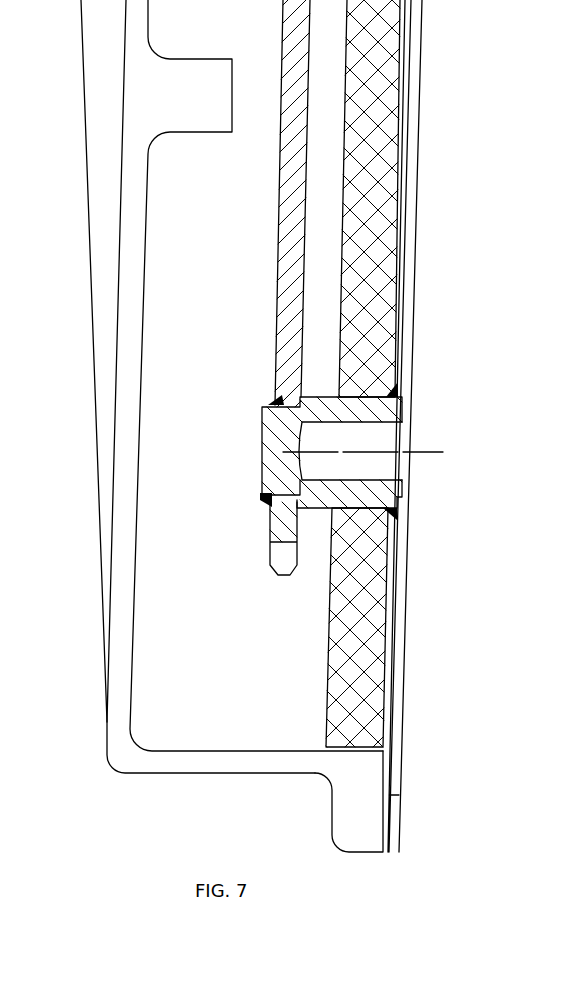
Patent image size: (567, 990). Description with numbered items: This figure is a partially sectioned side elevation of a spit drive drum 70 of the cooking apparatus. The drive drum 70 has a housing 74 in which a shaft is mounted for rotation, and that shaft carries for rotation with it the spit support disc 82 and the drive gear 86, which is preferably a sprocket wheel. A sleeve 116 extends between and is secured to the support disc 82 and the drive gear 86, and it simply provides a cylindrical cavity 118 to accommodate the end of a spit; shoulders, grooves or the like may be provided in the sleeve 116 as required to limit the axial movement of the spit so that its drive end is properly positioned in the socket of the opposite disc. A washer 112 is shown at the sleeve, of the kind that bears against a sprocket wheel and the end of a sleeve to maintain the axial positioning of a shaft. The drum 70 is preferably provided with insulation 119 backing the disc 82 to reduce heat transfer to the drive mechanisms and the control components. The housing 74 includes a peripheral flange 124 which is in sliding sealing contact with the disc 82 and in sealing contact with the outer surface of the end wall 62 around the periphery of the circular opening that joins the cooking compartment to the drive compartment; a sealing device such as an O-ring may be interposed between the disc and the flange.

The end 62 is at (400, 825).
The drive drum 70 is at (412, 587).
The housing 74 is at (119, 741).
The spit support disc 82 is at (396, 665).
The drive gear 86 is at (279, 229).
The washer 112 is at (413, 467).
The sleeve 116 is at (403, 497).
The cylindrical cavity 118 is at (387, 432).
The insulation 119 is at (370, 251).
The peripheral flange 124 is at (358, 806).